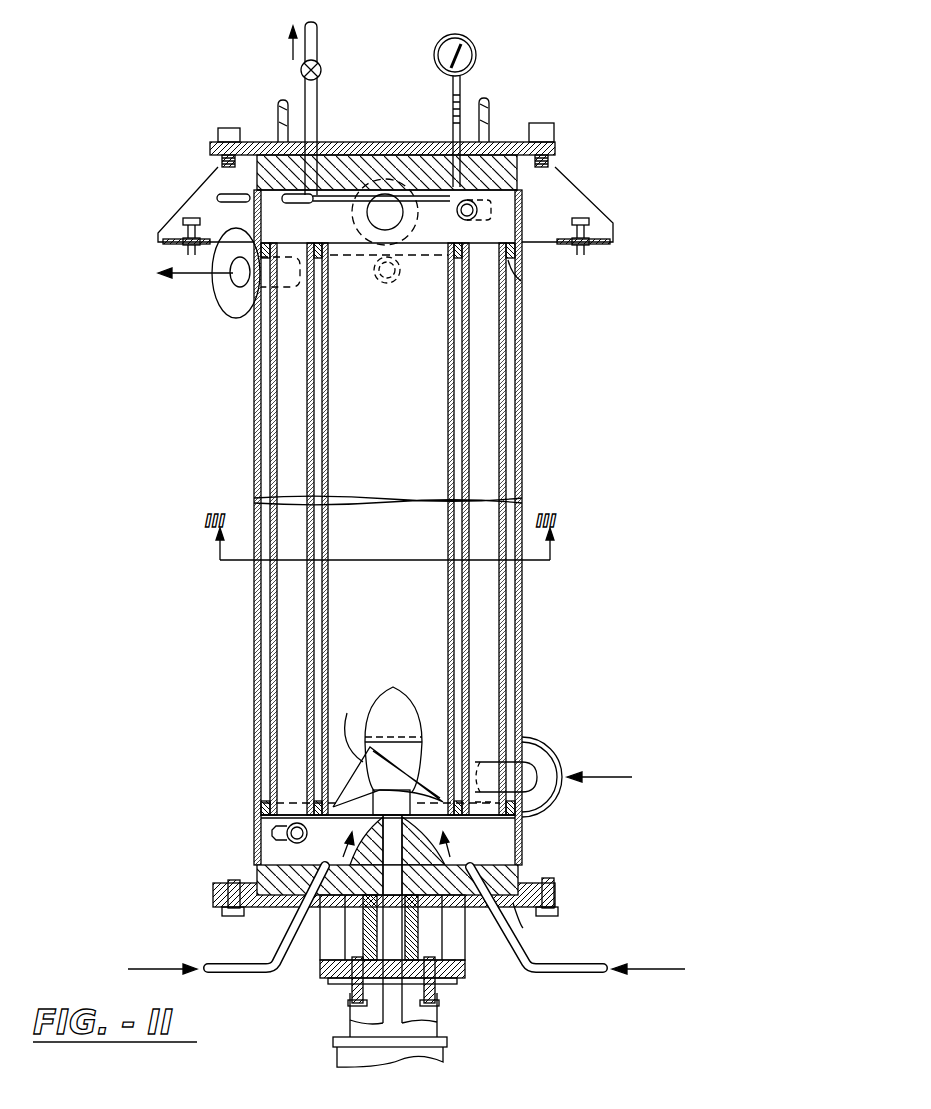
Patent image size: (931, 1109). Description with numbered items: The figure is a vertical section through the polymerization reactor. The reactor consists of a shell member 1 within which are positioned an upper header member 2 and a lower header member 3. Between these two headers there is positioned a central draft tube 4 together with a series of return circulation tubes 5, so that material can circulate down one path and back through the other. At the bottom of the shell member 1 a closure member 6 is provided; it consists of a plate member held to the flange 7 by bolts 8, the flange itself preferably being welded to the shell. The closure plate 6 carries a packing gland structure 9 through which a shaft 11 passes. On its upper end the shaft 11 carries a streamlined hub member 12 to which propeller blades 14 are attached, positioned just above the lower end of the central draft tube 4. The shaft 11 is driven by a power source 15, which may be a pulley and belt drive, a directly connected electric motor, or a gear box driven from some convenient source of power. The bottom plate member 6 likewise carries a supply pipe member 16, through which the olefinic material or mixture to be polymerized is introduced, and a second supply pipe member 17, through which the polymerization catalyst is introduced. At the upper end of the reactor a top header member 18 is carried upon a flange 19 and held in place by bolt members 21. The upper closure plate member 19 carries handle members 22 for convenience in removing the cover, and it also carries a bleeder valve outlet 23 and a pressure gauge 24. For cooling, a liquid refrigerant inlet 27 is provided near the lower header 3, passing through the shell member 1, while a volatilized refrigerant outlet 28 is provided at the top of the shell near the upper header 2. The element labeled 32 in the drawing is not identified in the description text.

The shell member 1 is at (254, 430).
The upper header member 2 is at (521, 281).
The lower header member 3 is at (497, 815).
The central draft tube 4 is at (450, 390).
The return circulation tubes 5 is at (268, 605).
The closure member 6 is at (525, 924).
The flange 7 is at (560, 882).
The bolts 8 is at (228, 914).
The packing gland structure 9 is at (430, 947).
The shaft 11 is at (403, 1022).
The streamlined hub member 12 is at (407, 703).
The propeller blades 14 is at (388, 744).
The power source 15 is at (447, 1057).
The supply pipe member 16 is at (537, 957).
The second supply pipe member 17 is at (248, 962).
The top header member 18 is at (507, 138).
The flange 19 is at (557, 157).
The bolt members 21 is at (232, 130).
The handle members 22 is at (278, 110).
The bleeder valve outlet 23 is at (318, 95).
The pressure gauge 24 is at (455, 108).
The liquid refrigerant inlet 27 is at (547, 750).
The volatilized refrigerant outlet 28 is at (225, 308).
The clamp 32 is at (226, 192).